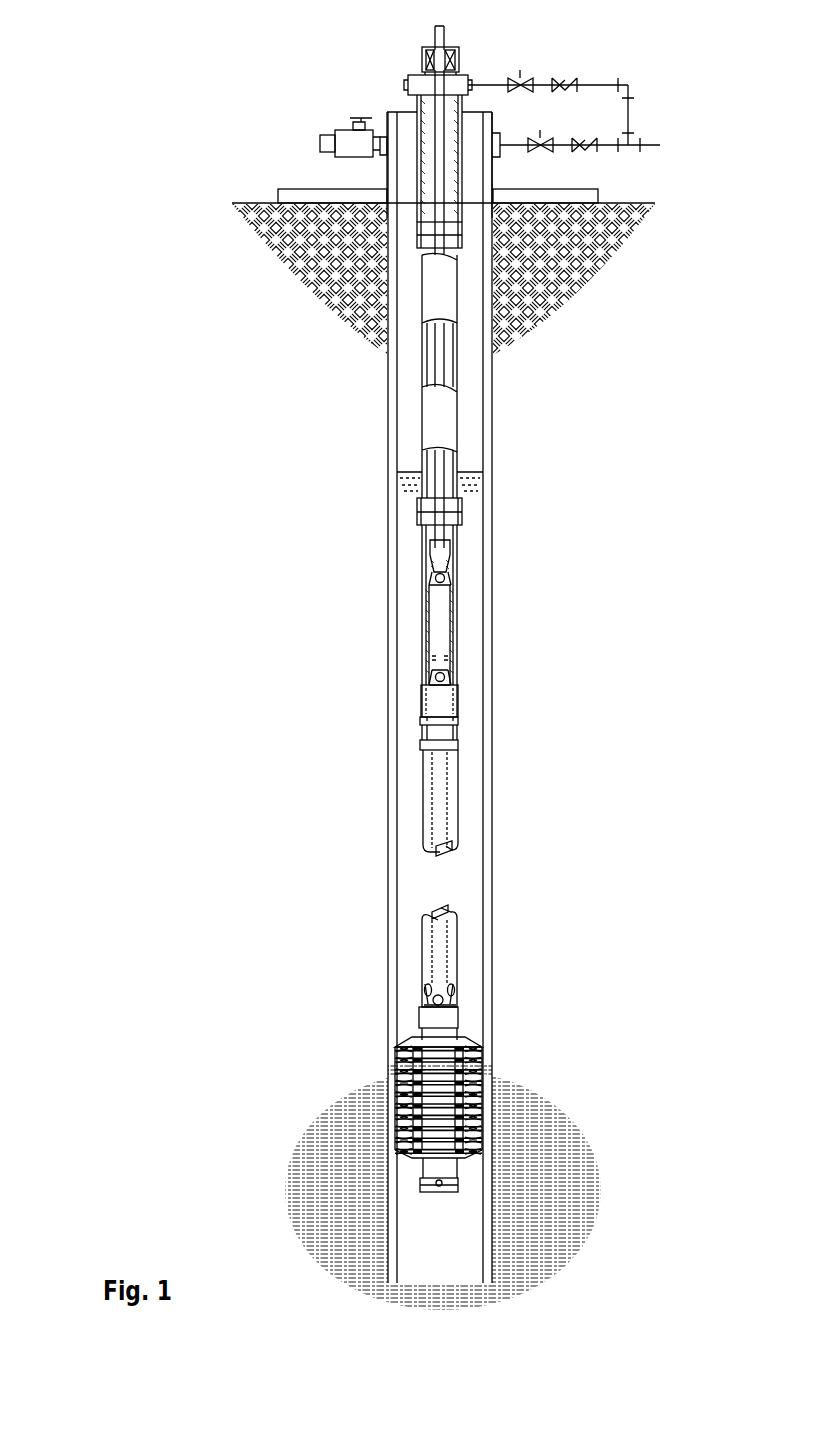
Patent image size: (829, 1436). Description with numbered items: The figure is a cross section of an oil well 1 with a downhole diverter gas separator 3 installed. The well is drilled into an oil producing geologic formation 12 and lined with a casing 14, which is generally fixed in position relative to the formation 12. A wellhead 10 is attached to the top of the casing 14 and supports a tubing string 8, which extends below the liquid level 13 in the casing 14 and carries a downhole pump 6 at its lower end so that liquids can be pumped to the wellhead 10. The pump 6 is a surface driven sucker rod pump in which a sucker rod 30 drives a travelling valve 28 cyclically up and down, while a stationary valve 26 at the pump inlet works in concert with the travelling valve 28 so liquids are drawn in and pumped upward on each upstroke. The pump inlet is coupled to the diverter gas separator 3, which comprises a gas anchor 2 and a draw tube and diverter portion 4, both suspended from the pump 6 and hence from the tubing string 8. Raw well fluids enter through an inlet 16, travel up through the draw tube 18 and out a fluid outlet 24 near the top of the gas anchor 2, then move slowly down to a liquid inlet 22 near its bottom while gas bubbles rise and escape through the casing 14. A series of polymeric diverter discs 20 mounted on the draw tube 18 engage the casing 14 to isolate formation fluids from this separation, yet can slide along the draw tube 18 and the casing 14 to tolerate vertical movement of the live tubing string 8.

The oil well 1 is at (124, 503).
The gas anchor 2 is at (538, 851).
The diverter gas separator 3 is at (428, 968).
The draw tube and diverter portion 4 is at (577, 1125).
The downhole pump 6 is at (552, 621).
The tubing string 8 is at (500, 218).
The wellhead 10 is at (400, 110).
The oil producing geologic formation 12 is at (592, 1232).
The liquid level 13 is at (397, 478).
The casing 14 is at (388, 398).
The inlet 16 is at (434, 1204).
The draw tube 18 is at (420, 1030).
The diverter discs 20 is at (396, 1053).
The liquid inlet 22 is at (424, 993).
The fluid outlet 24 is at (428, 740).
The stationary valve 26 is at (432, 673).
The travelling valve 28 is at (422, 572).
The sucker rod 30 is at (434, 33).